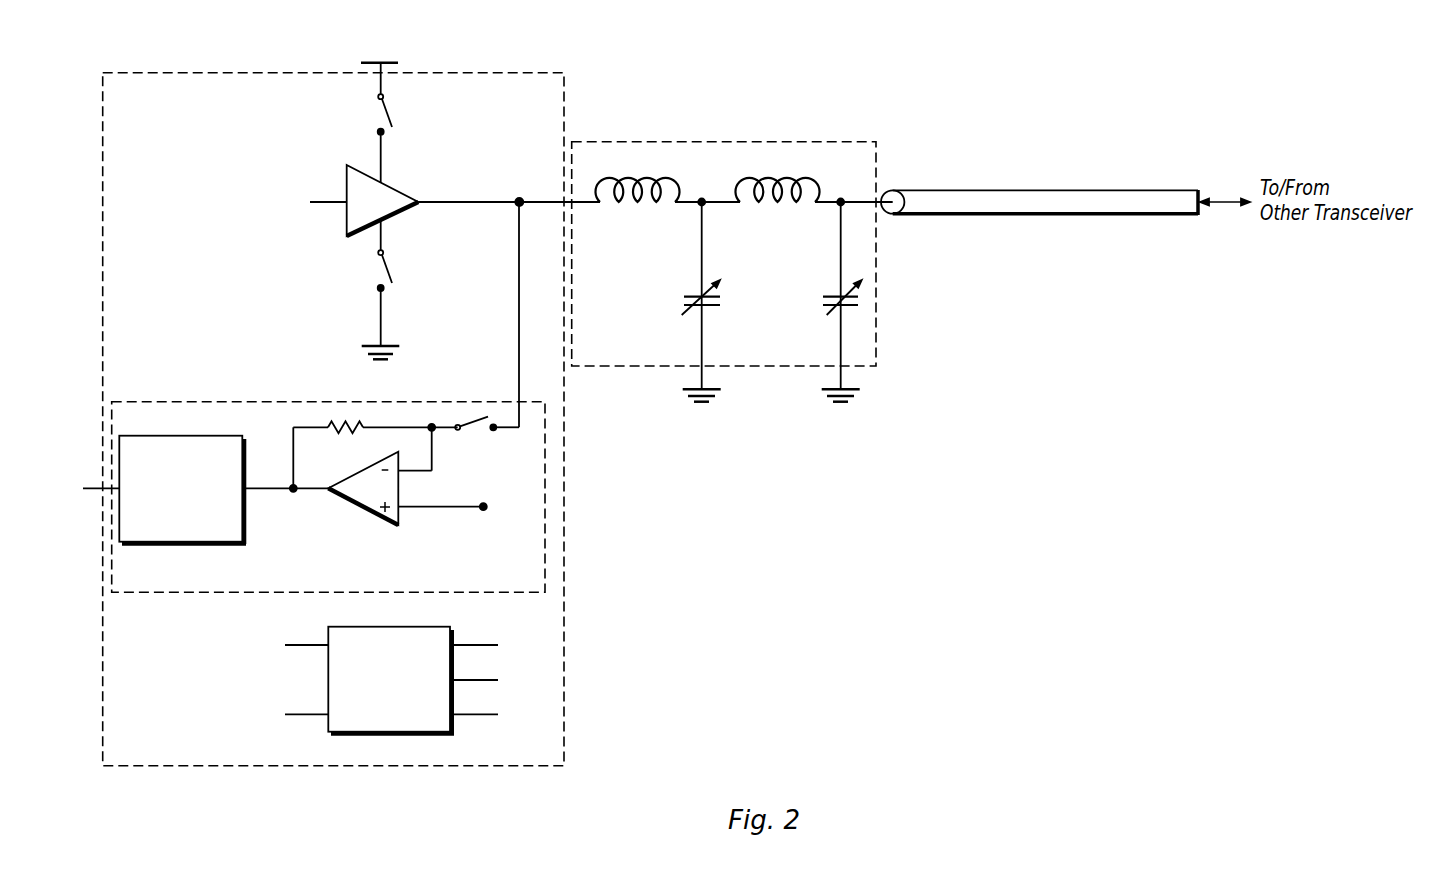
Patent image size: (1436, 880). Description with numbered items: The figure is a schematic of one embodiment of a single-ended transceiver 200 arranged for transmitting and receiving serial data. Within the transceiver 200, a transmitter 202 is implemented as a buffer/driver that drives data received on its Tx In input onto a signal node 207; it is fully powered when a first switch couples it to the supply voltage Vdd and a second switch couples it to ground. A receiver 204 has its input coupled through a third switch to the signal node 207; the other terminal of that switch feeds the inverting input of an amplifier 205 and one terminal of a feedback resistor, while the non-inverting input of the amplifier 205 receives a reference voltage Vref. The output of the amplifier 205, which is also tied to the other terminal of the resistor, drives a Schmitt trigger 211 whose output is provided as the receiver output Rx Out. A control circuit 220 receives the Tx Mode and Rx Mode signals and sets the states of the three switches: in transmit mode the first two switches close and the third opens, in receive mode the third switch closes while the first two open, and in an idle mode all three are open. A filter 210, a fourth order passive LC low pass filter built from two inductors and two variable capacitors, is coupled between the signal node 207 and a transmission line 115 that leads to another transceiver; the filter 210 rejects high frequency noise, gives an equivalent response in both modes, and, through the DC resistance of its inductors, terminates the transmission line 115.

The transceiver 200 is at (265, 382).
The transmitter 202 is at (342, 160).
The receiver 204 is at (238, 586).
The amplifier 205 is at (402, 527).
The signal node 207 is at (520, 197).
The filter 210 is at (665, 357).
The Schmitt trigger 211 is at (196, 525).
The control circuit 220 is at (405, 717).
The transmission line 115 is at (987, 175).